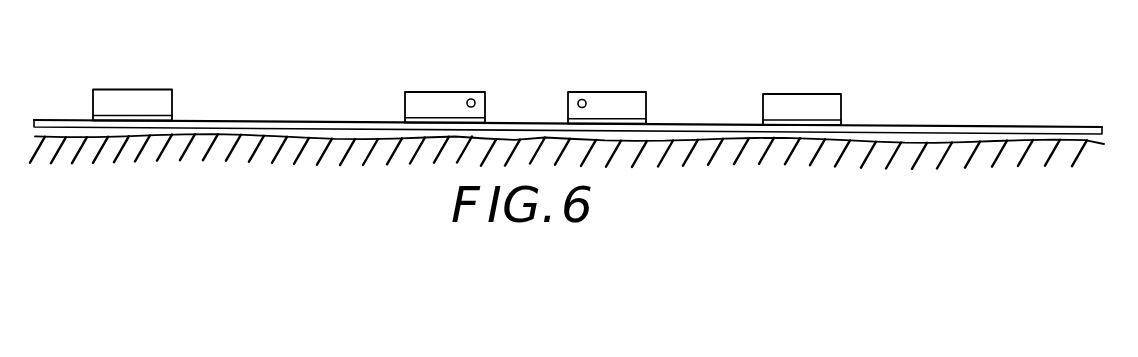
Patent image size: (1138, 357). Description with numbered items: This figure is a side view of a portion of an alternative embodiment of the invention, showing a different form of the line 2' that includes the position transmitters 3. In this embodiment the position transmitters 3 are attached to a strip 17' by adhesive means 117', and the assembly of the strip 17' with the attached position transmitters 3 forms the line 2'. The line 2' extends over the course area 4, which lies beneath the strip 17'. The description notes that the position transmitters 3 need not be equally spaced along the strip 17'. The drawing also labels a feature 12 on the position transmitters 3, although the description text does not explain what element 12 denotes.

The line 2' is at (568, 69).
The position transmitters 3 is at (131, 98).
The course area 4 is at (952, 140).
The terminal 12 is at (590, 90).
The strip 17' is at (568, 94).
The adhesive means 117' is at (507, 81).